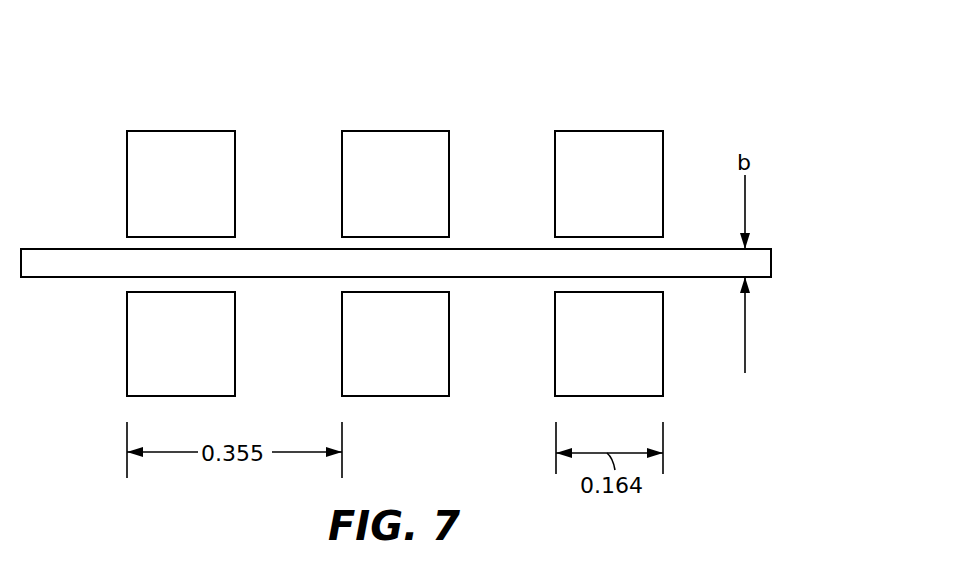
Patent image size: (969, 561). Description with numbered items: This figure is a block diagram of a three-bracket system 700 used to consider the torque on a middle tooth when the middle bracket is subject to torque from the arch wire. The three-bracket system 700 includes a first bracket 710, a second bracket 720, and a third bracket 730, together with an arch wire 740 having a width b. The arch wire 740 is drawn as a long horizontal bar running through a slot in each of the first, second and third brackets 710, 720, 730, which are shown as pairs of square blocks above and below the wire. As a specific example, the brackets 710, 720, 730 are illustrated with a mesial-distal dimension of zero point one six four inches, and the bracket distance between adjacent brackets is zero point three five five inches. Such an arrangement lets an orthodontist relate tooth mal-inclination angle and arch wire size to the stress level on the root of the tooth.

The 3-bracket system 700 is at (152, 70).
The first bracket 710 is at (157, 131).
The second bracket 720 is at (378, 131).
The third bracket 730 is at (591, 131).
The arch wire 740 is at (90, 249).